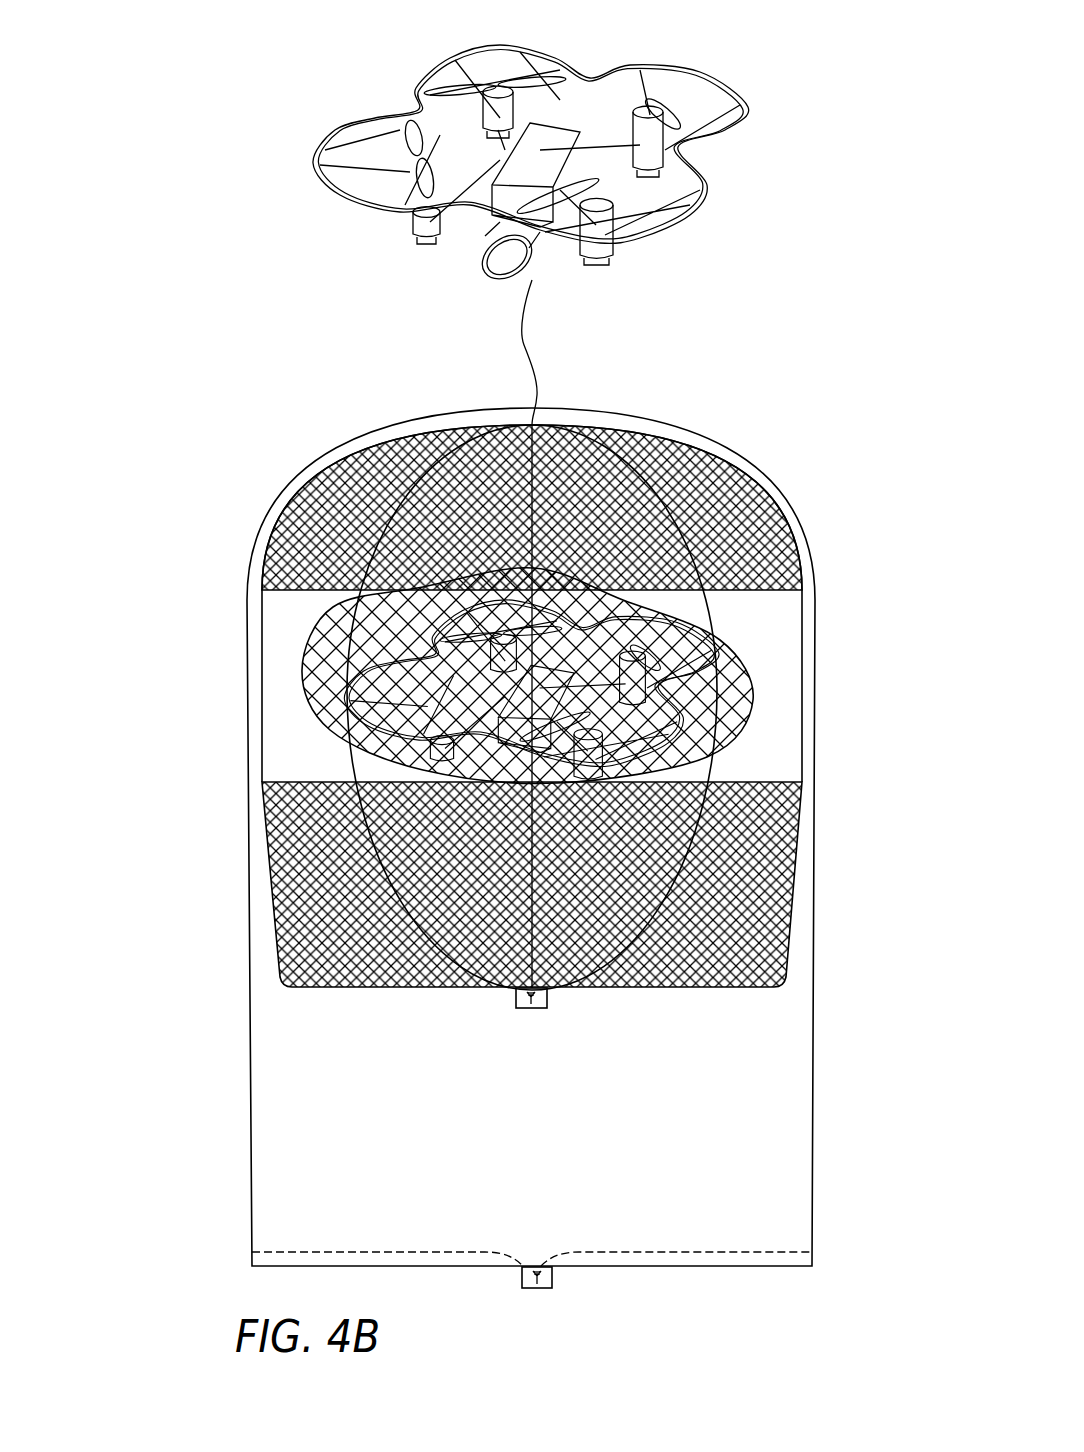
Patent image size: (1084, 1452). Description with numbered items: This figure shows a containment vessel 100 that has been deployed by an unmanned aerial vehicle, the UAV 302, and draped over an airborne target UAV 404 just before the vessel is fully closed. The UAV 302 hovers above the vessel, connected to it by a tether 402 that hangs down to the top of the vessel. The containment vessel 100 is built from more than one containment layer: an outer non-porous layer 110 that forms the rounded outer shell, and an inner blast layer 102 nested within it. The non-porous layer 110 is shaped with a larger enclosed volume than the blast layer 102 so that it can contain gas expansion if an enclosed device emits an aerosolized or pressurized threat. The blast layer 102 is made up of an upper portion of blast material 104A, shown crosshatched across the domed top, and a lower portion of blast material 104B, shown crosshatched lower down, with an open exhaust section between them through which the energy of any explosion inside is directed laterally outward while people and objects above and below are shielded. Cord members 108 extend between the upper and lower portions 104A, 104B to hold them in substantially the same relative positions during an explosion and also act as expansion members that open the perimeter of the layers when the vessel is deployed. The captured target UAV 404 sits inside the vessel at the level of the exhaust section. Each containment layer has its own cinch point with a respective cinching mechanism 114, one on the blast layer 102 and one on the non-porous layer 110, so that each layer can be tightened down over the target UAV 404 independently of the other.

The containment vessel 100 is at (242, 270).
The blast layer 102 is at (708, 468).
The upper portion of blast material 104A is at (752, 527).
The lower portion of blast material 104B is at (728, 867).
The cord members 108 is at (388, 903).
The non-porous layer 110 is at (340, 458).
The cinching mechanism 114 is at (565, 1002).
The UAV 302 is at (372, 50).
The tether 402 is at (528, 358).
The target UAV 404 is at (712, 684).